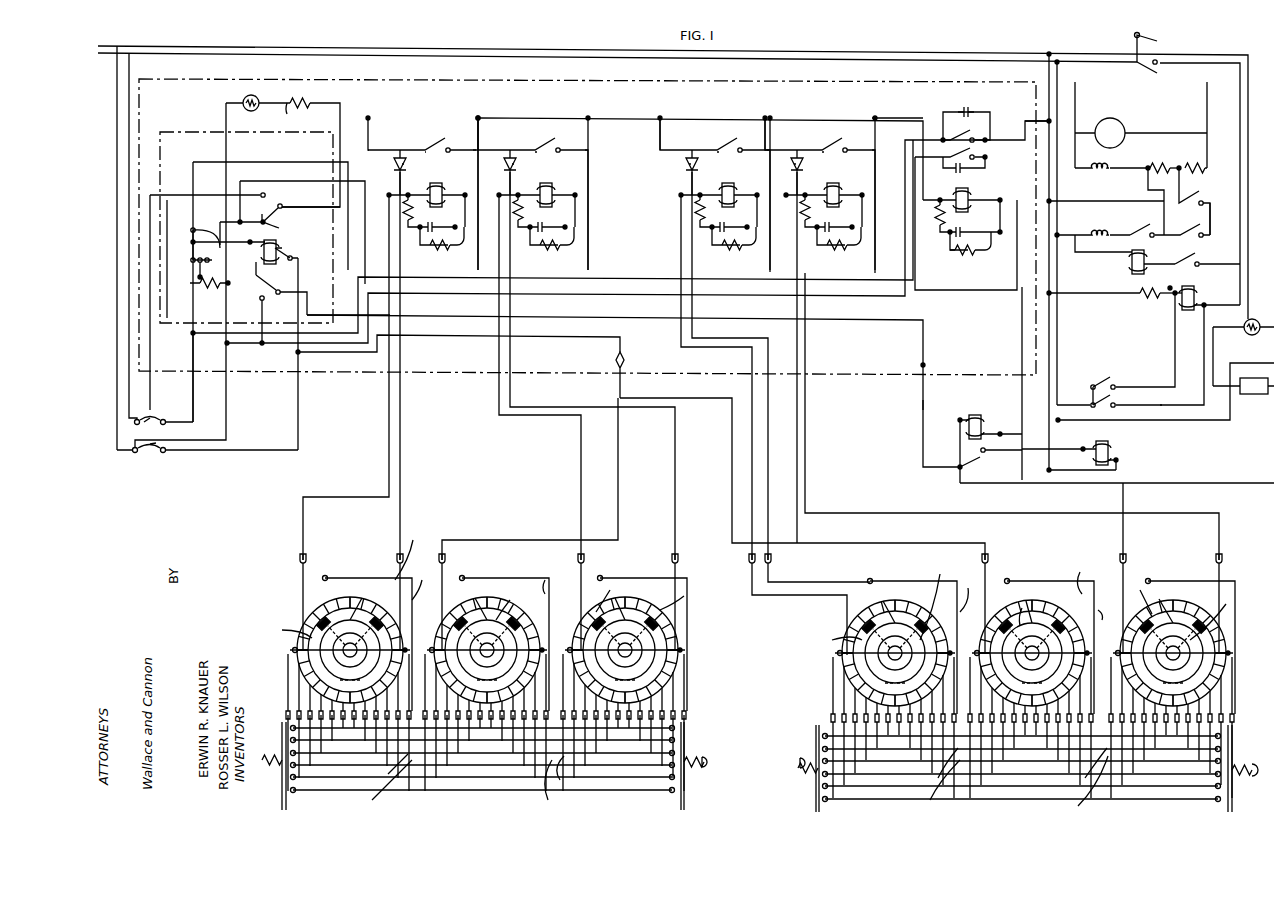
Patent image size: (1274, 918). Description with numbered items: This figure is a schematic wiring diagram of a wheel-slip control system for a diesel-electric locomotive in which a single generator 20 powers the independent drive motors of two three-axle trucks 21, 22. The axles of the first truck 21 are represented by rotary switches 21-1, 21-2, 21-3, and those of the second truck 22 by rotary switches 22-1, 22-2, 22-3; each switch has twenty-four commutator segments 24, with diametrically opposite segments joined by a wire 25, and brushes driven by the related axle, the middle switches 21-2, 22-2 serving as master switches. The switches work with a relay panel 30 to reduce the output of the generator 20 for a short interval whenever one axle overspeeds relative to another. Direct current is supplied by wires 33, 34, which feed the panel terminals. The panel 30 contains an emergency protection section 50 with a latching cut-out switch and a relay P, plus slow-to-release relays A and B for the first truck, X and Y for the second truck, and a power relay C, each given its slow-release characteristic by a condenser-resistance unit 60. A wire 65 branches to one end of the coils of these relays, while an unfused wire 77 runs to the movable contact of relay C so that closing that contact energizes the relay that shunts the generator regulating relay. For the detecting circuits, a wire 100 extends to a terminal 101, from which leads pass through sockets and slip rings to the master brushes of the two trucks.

The generator 20 is at (1131, 130).
The three-axle truck 21 is at (501, 803).
The three-axle truck 22 is at (1041, 805).
The rotary switch 21-1 is at (355, 583).
The master switch 21-2 is at (497, 586).
The rotary switch 21-3 is at (640, 580).
The rotary switch 22-1 is at (902, 583).
The master switch 22-2 is at (1051, 600).
The rotary switch 22-3 is at (1174, 586).
The commutator segments 24 is at (761, 600).
The wire 25 is at (757, 587).
The relay panel 30 is at (608, 77).
The wire 33 is at (112, 46).
The wire 34 is at (110, 78).
The emergency protection section 50 is at (193, 125).
The condenser-resistance units 60 is at (466, 250).
The wire 65 is at (205, 345).
The wire 77 is at (276, 340).
The wire 100 is at (470, 342).
The terminal 101 is at (638, 352).